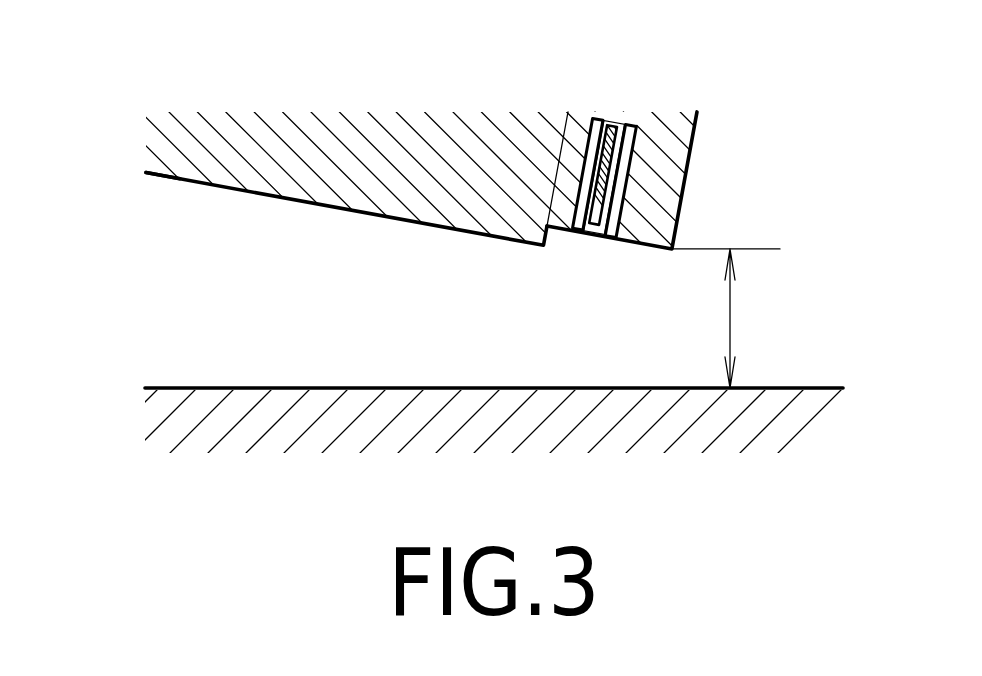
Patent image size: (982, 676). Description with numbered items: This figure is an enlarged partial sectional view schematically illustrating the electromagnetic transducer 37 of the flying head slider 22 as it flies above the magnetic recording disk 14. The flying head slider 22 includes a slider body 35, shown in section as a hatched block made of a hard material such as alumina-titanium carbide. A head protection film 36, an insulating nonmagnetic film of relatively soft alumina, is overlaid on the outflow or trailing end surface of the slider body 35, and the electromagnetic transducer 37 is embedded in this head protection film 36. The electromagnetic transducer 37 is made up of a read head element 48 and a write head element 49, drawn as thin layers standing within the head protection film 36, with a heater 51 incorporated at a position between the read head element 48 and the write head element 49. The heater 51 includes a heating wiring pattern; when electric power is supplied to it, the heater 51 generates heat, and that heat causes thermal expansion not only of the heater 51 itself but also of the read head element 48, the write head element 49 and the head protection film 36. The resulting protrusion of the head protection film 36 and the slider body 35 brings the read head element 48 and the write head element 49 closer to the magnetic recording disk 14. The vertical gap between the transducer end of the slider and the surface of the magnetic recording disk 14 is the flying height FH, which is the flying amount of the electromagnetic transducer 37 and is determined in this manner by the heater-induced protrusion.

The magnetic recording disk 14 is at (198, 390).
The flying head slider 22 is at (170, 175).
The slider body 35 is at (423, 222).
The head protection film 36 is at (684, 182).
The electromagnetic transducer 37 is at (590, 163).
The read head element 48 is at (575, 231).
The write head element 49 is at (611, 238).
The heater 51 is at (593, 226).
The flying height FH is at (765, 318).